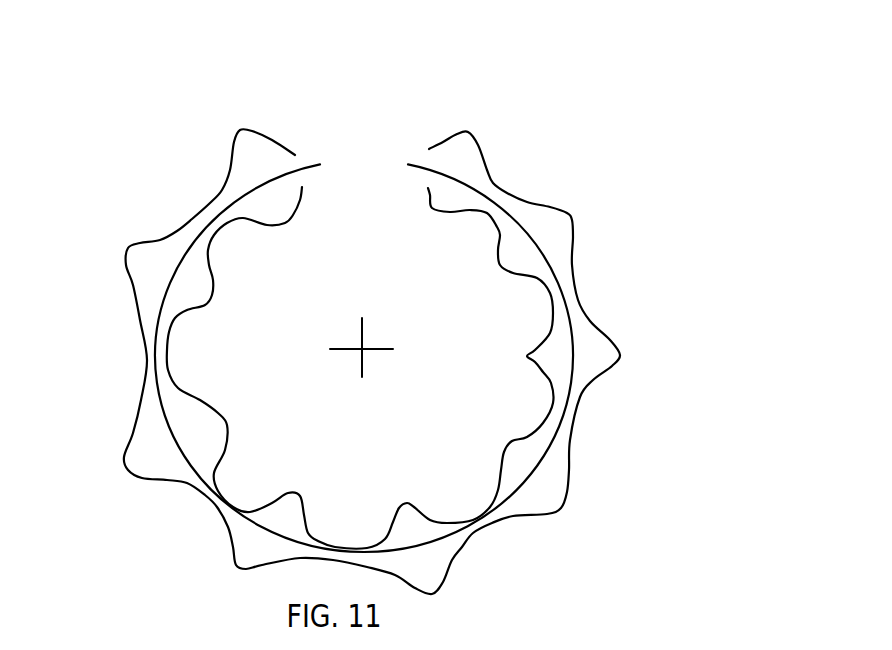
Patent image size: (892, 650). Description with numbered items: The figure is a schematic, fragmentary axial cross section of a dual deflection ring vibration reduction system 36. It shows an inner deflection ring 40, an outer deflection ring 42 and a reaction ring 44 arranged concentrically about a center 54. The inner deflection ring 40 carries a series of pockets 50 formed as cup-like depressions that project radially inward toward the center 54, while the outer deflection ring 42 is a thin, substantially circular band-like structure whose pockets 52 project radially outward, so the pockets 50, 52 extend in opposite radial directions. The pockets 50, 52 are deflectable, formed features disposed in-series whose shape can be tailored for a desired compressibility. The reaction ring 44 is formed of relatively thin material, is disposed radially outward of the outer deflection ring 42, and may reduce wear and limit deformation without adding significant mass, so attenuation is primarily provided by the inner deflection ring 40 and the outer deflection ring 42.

The dual deflection ring vibration reduction system 36 is at (471, 108).
The inner deflection ring 40 is at (215, 277).
The outer deflection ring 42 is at (137, 420).
The reaction ring 44 is at (170, 432).
The pockets 50 is at (530, 356).
The pockets 52 is at (572, 219).
The center 54 is at (363, 352).